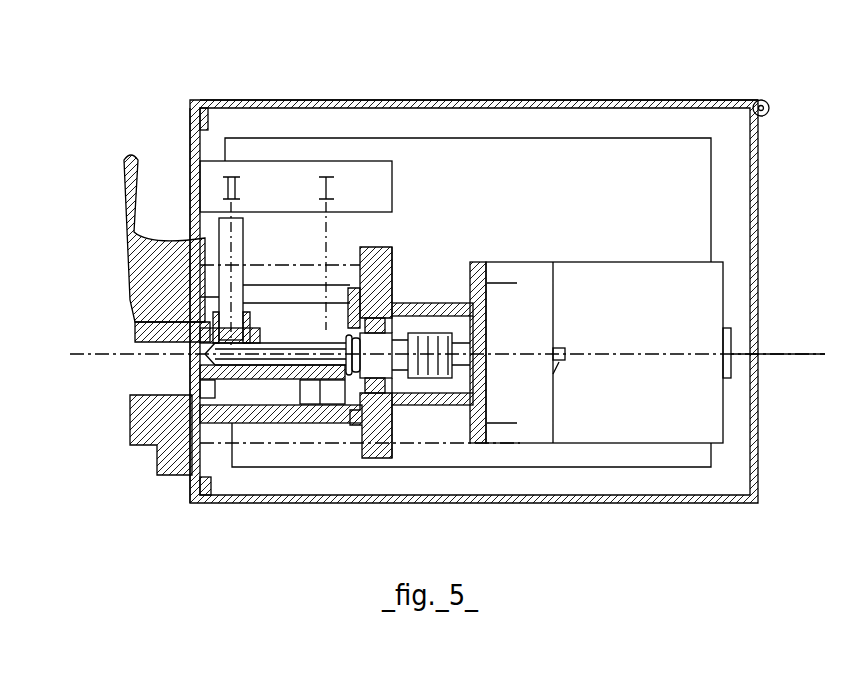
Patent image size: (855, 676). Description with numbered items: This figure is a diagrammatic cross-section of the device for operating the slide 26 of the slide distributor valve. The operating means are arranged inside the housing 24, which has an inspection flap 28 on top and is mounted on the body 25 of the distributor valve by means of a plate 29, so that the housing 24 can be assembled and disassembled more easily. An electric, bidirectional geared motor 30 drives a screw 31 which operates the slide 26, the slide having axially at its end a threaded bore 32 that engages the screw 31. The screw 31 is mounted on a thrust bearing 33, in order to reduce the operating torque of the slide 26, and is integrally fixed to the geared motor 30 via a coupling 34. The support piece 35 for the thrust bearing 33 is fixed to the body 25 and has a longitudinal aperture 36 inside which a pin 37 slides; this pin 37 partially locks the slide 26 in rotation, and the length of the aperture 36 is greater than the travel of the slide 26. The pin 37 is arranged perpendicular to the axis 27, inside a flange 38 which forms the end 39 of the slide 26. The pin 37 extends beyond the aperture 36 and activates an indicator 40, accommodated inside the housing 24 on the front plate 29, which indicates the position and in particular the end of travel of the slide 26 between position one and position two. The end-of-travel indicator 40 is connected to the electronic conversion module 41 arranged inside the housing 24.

The housing 24 is at (758, 455).
The body 25 is at (158, 446).
The slide 26 is at (200, 364).
The axis 27 is at (778, 350).
The inspection flap 28 is at (550, 100).
The plate 29 is at (190, 138).
The geared motor 30 is at (562, 445).
The screw 31 is at (288, 342).
The threaded bore 32 is at (200, 381).
The thrust bearing 33 is at (400, 302).
The coupling 34 is at (440, 380).
The support piece 35 is at (350, 430).
The aperture 36 is at (310, 292).
The pin 37 is at (243, 238).
The flange 38 is at (318, 404).
The end 39 is at (250, 326).
The indicator 40 is at (392, 186).
The electronic conversion module 41 is at (711, 182).